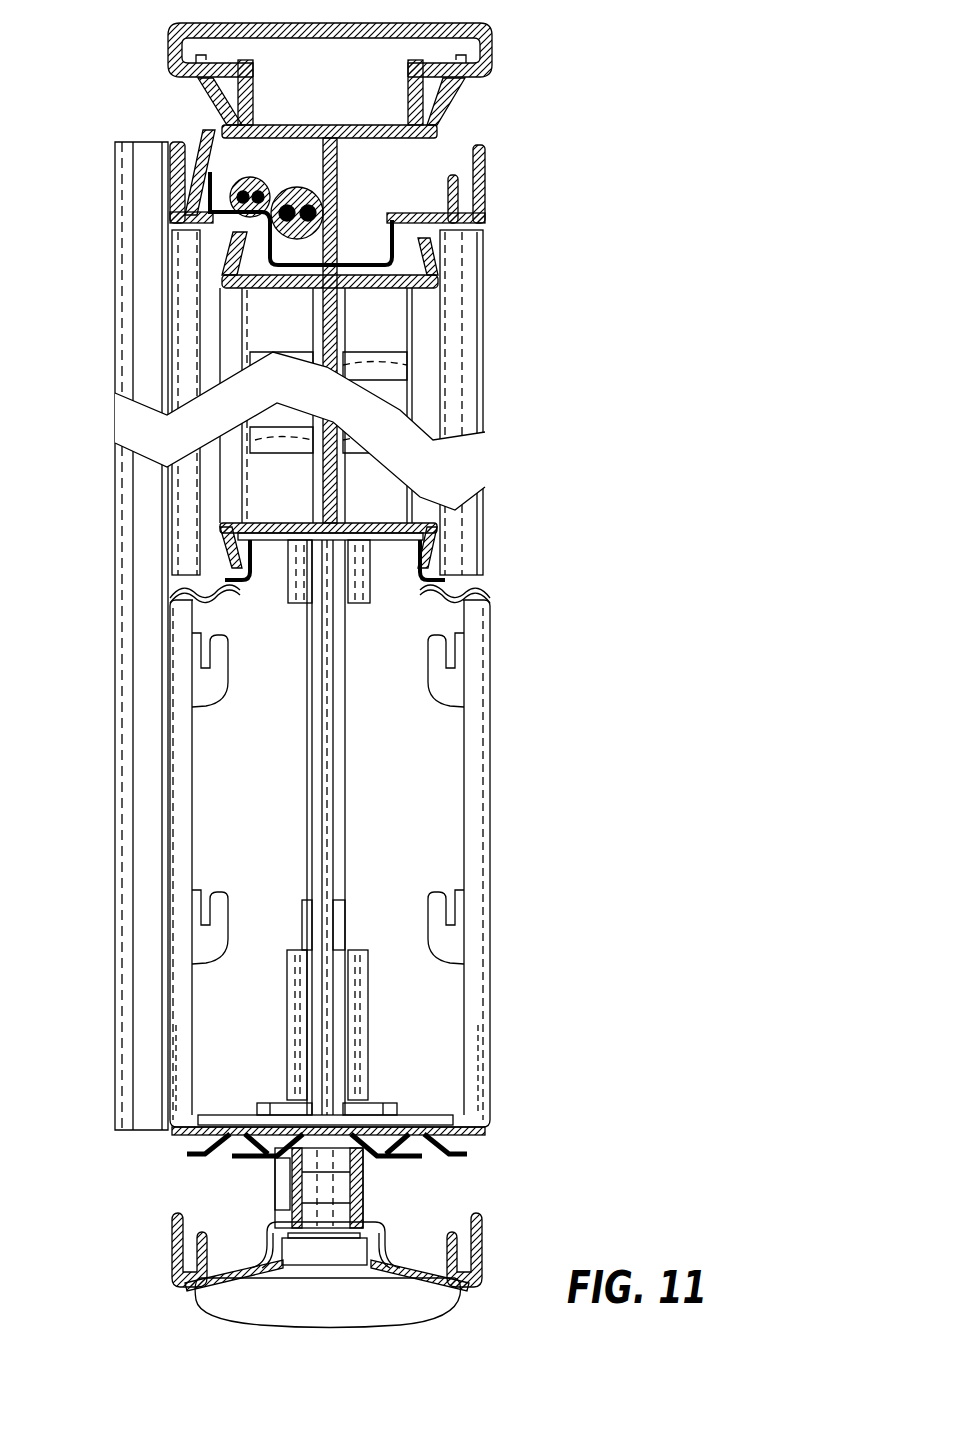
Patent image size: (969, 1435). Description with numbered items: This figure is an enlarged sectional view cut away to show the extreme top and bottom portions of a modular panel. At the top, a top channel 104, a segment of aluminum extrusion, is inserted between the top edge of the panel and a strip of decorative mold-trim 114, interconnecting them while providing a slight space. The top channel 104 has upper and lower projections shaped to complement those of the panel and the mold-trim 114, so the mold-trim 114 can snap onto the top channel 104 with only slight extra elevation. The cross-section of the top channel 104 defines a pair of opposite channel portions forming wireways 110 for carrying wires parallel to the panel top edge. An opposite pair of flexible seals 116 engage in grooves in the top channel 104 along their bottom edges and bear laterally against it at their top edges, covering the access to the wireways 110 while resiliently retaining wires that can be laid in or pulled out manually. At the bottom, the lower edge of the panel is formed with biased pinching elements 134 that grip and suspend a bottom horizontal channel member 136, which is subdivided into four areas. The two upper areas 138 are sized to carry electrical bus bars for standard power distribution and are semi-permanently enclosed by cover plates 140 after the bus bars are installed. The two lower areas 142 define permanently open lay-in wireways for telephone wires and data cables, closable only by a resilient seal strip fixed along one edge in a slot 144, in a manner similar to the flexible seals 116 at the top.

The top channel 104 is at (488, 193).
The wireways 110 is at (447, 150).
The mold-trim 114 is at (422, 23).
The flexible seals 116 is at (198, 140).
The biased pinching elements 134 is at (437, 563).
The bottom horizontal channel member 136 is at (483, 1133).
The upper areas 138 is at (215, 828).
The cover plates 140 is at (487, 886).
The lower areas 142 is at (215, 1197).
The slot 144 is at (182, 1208).